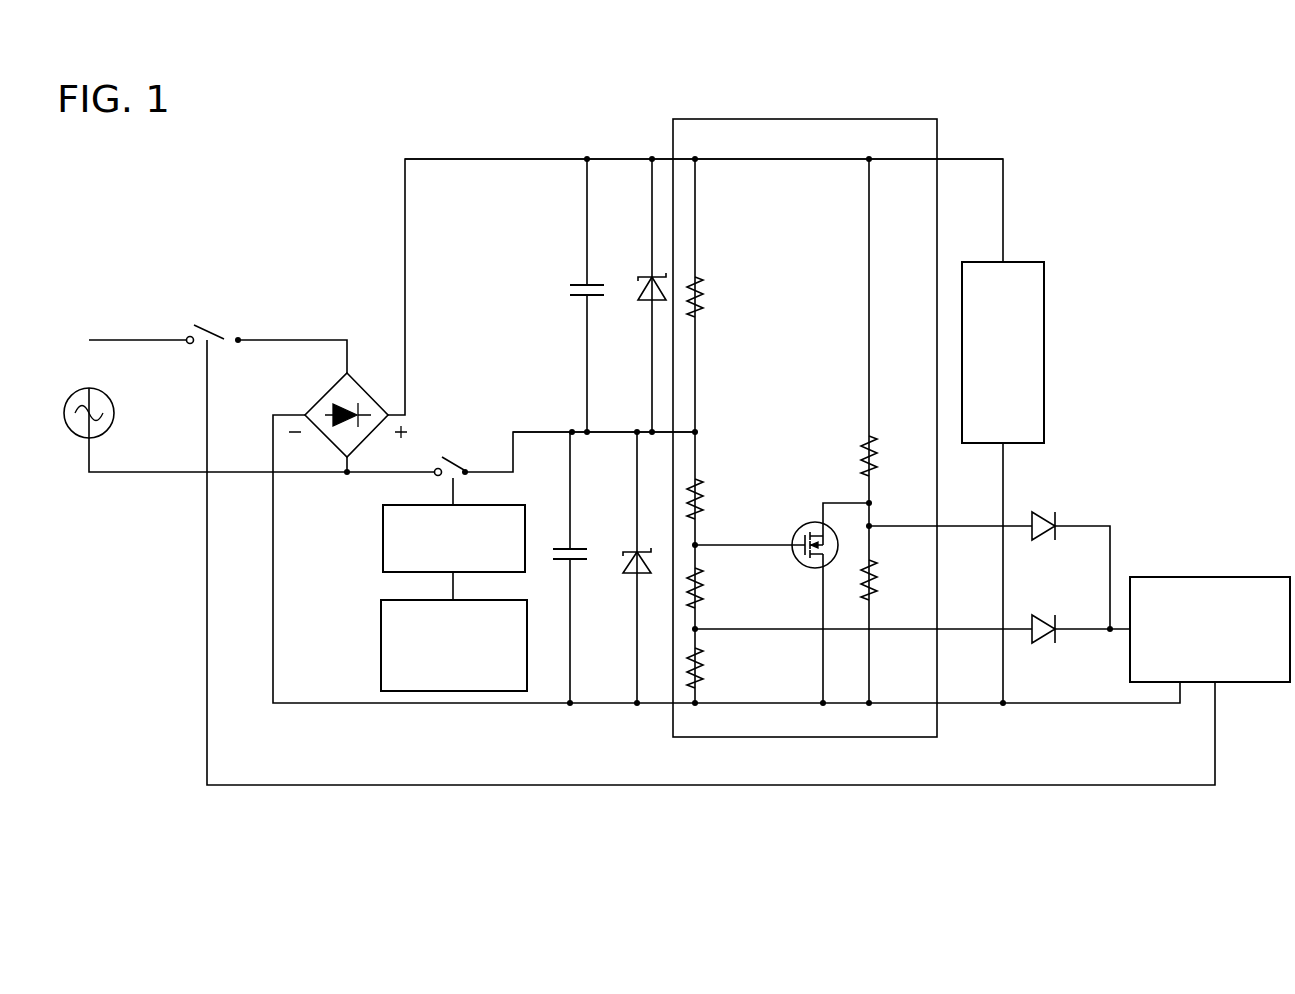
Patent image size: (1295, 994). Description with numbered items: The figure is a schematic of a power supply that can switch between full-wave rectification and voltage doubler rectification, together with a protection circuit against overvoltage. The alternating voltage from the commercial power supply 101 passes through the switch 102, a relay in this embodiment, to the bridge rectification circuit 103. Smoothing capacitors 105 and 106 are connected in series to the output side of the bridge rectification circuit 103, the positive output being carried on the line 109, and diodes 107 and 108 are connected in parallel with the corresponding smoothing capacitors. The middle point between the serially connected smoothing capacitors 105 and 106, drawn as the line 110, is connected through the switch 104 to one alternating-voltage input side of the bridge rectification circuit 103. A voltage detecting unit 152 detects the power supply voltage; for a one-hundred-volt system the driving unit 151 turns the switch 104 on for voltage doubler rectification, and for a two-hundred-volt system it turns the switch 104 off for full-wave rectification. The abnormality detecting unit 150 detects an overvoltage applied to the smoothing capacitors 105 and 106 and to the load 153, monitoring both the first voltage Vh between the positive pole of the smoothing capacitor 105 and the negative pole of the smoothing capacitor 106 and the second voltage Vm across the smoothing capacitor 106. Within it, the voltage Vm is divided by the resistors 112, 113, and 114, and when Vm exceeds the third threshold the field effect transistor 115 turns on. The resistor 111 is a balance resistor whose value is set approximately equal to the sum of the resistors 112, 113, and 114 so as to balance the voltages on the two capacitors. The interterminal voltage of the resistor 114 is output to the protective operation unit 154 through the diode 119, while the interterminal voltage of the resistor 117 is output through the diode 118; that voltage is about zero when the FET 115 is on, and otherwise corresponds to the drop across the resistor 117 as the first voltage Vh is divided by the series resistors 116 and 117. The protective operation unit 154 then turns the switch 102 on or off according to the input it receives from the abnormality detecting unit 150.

The commercial power supply 101 is at (93, 393).
The switch 102 is at (210, 328).
The bridge rectification circuit 103 is at (372, 391).
The switch 104 is at (454, 460).
The smoothing capacitor 105 is at (577, 280).
The smoothing capacitor 106 is at (578, 545).
The diode 107 is at (646, 304).
The diode 108 is at (629, 576).
The high-voltage power supply line 109 is at (477, 158).
The low-voltage power supply line 110 is at (544, 431).
The resistor 111 is at (704, 301).
The resistor 112 is at (704, 485).
The resistor 113 is at (704, 577).
The resistor 114 is at (704, 669).
The field effect transistor (FET) 115 is at (811, 521).
The resistor 116 is at (869, 457).
The resistor 117 is at (869, 584).
The diode 118 is at (1046, 511).
The diode 119 is at (1046, 614).
The abnormality detecting unit 150 is at (673, 727).
The driving unit 151 is at (383, 538).
The voltage detecting unit 152 is at (381, 647).
The load 153 is at (1044, 355).
The protective operation unit 154 is at (1219, 577).